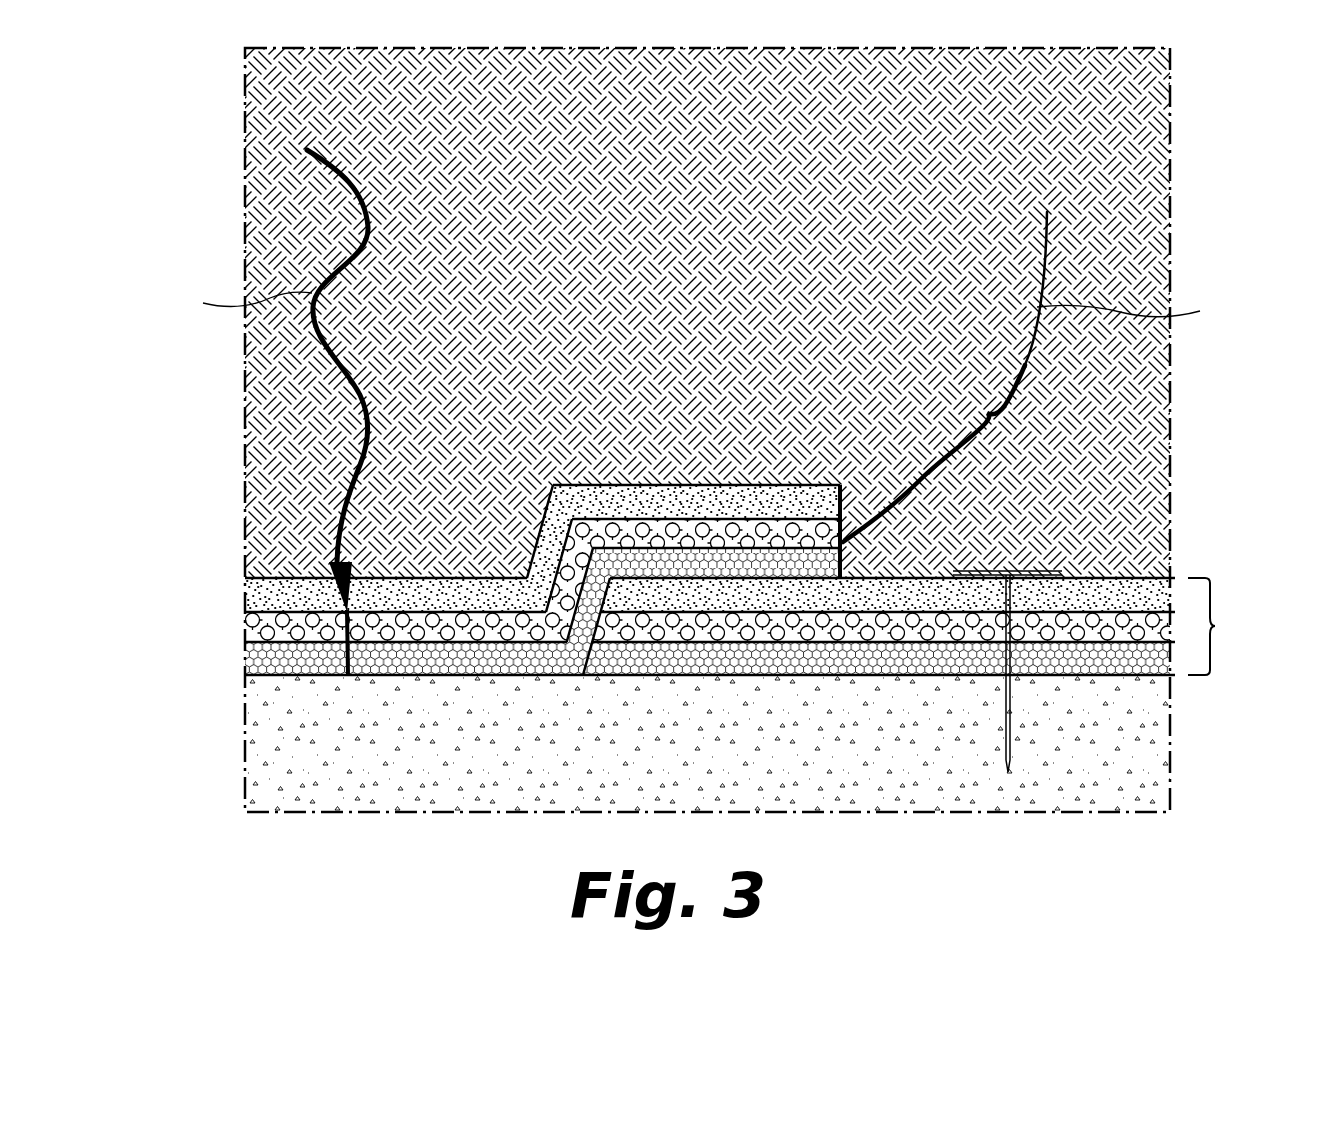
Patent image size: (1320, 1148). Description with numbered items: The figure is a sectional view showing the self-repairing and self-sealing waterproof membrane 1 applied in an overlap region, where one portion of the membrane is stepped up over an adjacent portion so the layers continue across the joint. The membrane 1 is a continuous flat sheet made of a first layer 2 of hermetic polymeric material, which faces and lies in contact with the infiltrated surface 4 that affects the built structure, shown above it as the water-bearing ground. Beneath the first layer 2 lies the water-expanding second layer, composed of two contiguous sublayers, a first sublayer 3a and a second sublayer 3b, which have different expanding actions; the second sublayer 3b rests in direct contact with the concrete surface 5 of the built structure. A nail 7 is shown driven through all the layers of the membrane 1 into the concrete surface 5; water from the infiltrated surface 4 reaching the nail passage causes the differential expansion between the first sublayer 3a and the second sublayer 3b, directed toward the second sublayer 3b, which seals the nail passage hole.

The self-repairing and self-sealing waterproof membrane 1 is at (1215, 626).
The first layer 2 is at (258, 584).
The first sublayer 3a is at (258, 623).
The second sublayer 3b is at (262, 658).
The infiltrated surface 4 is at (1108, 432).
The concrete surface 5 is at (300, 748).
The nail 7 is at (1008, 713).